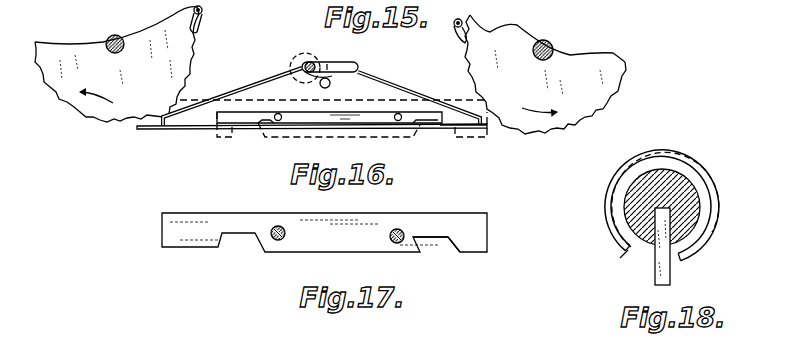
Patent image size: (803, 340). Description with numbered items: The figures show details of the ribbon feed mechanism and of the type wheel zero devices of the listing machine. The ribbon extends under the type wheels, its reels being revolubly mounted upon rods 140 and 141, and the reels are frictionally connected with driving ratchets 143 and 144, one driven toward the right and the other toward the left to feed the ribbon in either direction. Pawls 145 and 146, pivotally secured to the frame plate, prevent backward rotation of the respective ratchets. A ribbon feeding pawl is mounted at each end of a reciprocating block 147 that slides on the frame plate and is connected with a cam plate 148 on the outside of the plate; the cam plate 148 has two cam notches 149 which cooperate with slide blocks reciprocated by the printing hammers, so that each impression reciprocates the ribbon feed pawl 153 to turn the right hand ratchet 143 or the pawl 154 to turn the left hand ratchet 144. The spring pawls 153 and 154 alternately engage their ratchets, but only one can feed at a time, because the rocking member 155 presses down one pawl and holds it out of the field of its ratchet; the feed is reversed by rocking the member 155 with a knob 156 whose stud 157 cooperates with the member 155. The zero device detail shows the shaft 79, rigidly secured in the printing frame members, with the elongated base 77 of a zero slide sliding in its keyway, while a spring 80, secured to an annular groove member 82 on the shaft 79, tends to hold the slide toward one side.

In FIG. 16, the rod 140 is at (554, 46).
In FIG. 16, the rod 141 is at (117, 38).
In FIG. 16, the driving ratchet 143 is at (608, 80).
In FIG. 16, the driving ratchet 144 is at (57, 50).
In FIG. 16, the pawl 145 is at (453, 32).
In FIG. 16, the pawl 146 is at (204, 12).
In FIG. 16, the reciprocating block 147 is at (313, 118).
In FIG. 17, the cam plate 148 is at (482, 233).
In FIG. 17, the cam notch 149 is at (446, 250).
In FIG. 16, the ribbon feed pawl 153 is at (497, 129).
In FIG. 16, the ribbon feed pawl 154 is at (173, 129).
In FIG. 16, the rocking member 155 is at (260, 83).
In FIG. 16, the knob 156 is at (295, 54).
In FIG. 16, the stud 157 is at (326, 63).
In FIG. 18, the base 77 is at (655, 272).
In FIG. 18, the shaft 79 is at (652, 185).
In FIG. 18, the spring 80 is at (716, 243).
In FIG. 18, the annular groove member 82 is at (716, 188).